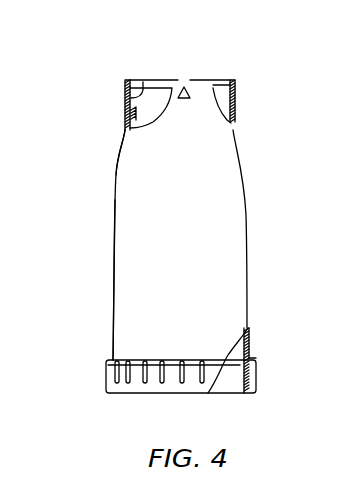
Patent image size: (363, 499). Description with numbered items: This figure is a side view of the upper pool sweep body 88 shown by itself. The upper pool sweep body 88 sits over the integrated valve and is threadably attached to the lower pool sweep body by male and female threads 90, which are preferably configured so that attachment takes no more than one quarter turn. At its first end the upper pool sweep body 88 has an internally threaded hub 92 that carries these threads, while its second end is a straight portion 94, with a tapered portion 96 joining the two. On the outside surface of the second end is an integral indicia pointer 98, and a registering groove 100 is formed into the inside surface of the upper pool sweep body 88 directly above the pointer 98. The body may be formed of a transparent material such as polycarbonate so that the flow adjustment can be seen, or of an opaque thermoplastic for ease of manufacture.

The upper pool sweep body 88 is at (247, 224).
The male and female threads 90 is at (246, 386).
The internally threaded hub 92 is at (106, 380).
The straight portion 94 is at (113, 265).
The tapered portion 96 is at (117, 162).
The indicia pointer 98 is at (190, 93).
The registering groove 100 is at (144, 82).